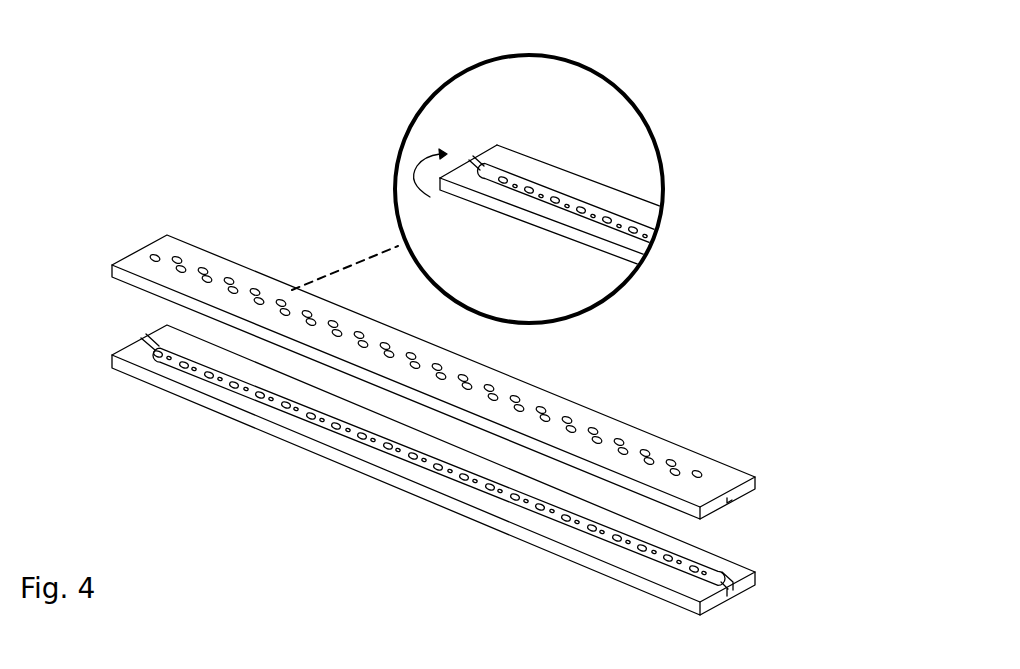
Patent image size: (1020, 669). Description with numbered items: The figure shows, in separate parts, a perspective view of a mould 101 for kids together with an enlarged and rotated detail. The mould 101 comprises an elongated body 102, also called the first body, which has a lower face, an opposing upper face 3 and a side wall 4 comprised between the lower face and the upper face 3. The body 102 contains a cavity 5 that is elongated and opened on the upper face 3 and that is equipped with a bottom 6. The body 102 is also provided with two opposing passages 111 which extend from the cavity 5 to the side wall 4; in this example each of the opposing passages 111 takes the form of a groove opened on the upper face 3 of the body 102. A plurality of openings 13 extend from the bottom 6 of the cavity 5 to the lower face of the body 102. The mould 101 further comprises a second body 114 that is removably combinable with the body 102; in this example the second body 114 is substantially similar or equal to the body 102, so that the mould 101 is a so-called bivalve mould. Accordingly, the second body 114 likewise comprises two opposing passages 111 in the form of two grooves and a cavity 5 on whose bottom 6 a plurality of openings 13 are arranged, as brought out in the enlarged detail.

The mould 101 is at (707, 362).
The elongated body 102 is at (438, 470).
The second body 114 is at (150, 240).
The upper face 3 is at (120, 352).
The side wall 4 is at (752, 580).
The cavity 5 is at (152, 362).
The bottom 6 is at (420, 375).
The openings 13 is at (673, 458).
The opposing passages 111 is at (481, 166).